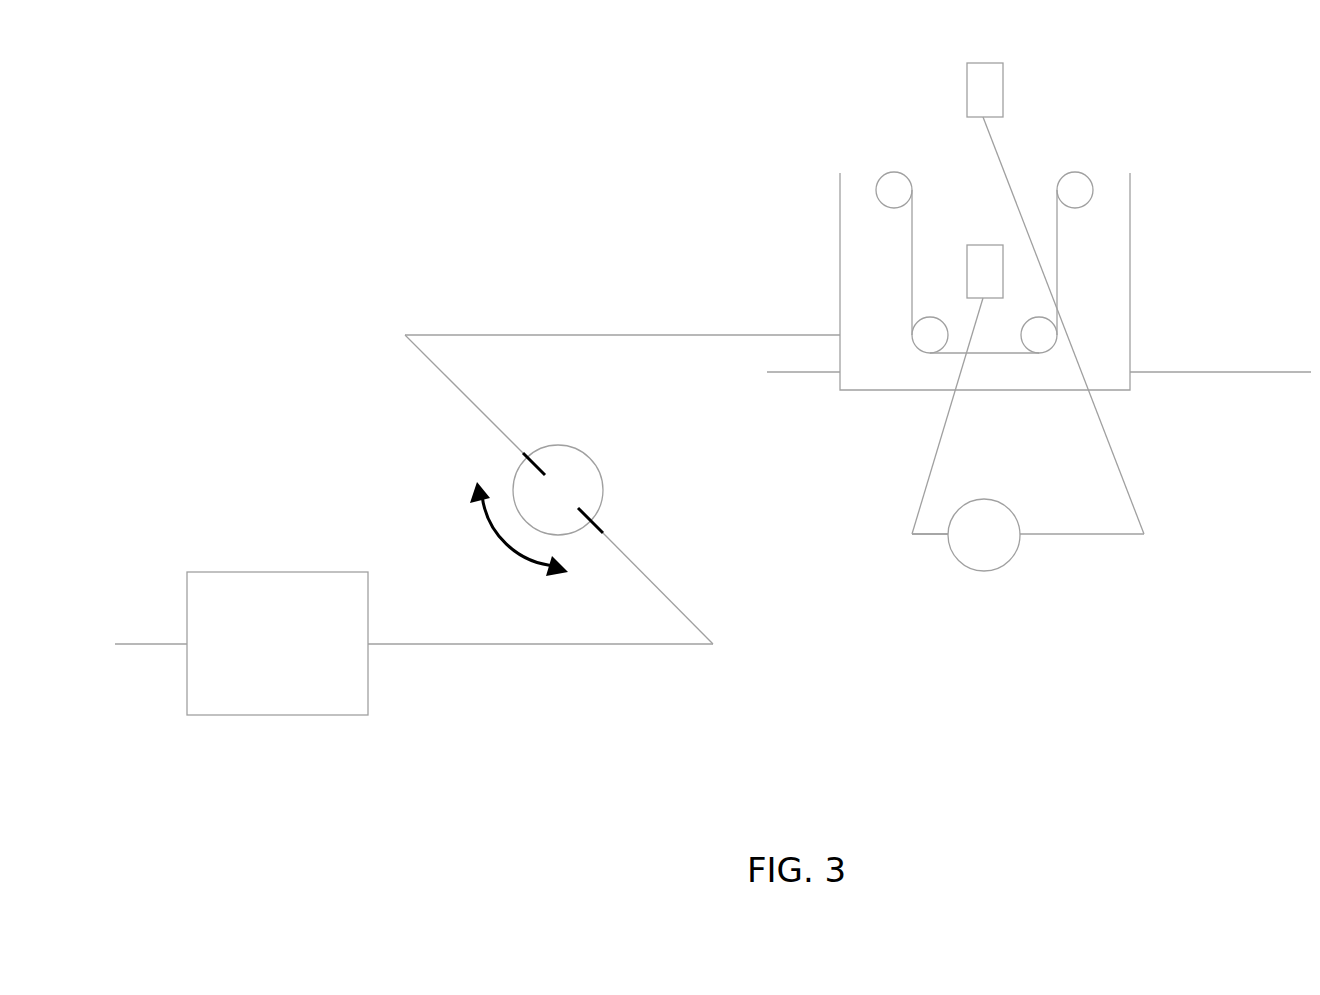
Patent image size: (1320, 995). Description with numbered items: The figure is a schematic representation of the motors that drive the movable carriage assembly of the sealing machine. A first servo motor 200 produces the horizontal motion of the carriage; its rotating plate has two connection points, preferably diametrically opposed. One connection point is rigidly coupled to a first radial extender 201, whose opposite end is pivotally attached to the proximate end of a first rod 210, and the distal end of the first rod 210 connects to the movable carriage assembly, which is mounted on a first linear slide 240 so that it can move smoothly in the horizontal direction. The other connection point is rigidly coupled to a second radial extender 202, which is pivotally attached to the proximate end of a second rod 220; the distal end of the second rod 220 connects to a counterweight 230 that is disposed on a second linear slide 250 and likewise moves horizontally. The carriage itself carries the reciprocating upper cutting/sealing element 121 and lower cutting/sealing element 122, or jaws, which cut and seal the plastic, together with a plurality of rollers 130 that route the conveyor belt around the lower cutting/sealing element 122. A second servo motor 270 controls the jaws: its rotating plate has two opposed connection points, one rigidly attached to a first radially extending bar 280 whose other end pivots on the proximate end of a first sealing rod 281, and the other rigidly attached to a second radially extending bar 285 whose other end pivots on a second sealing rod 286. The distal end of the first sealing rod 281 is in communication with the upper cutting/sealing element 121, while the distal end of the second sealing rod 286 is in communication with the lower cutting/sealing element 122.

The upper cutting/sealing element 121 is at (1003, 75).
The lower cutting/sealing element 122 is at (967, 270).
The rollers 130 is at (1093, 185).
The first servo motor 200 is at (605, 487).
The first radial extender 201 is at (458, 393).
The second radial extender 202 is at (657, 583).
The first rod 210 is at (613, 335).
The second rod 220 is at (521, 644).
The counterweight 230 is at (277, 643).
The first linear slide 240 is at (820, 372).
The second linear slide 250 is at (169, 644).
The second servo motor 270 is at (983, 571).
The first radially extending bar 280 is at (1093, 534).
The first sealing rod 281 is at (1112, 450).
The second radially extending bar 285 is at (942, 534).
The second sealing rod 286 is at (947, 413).